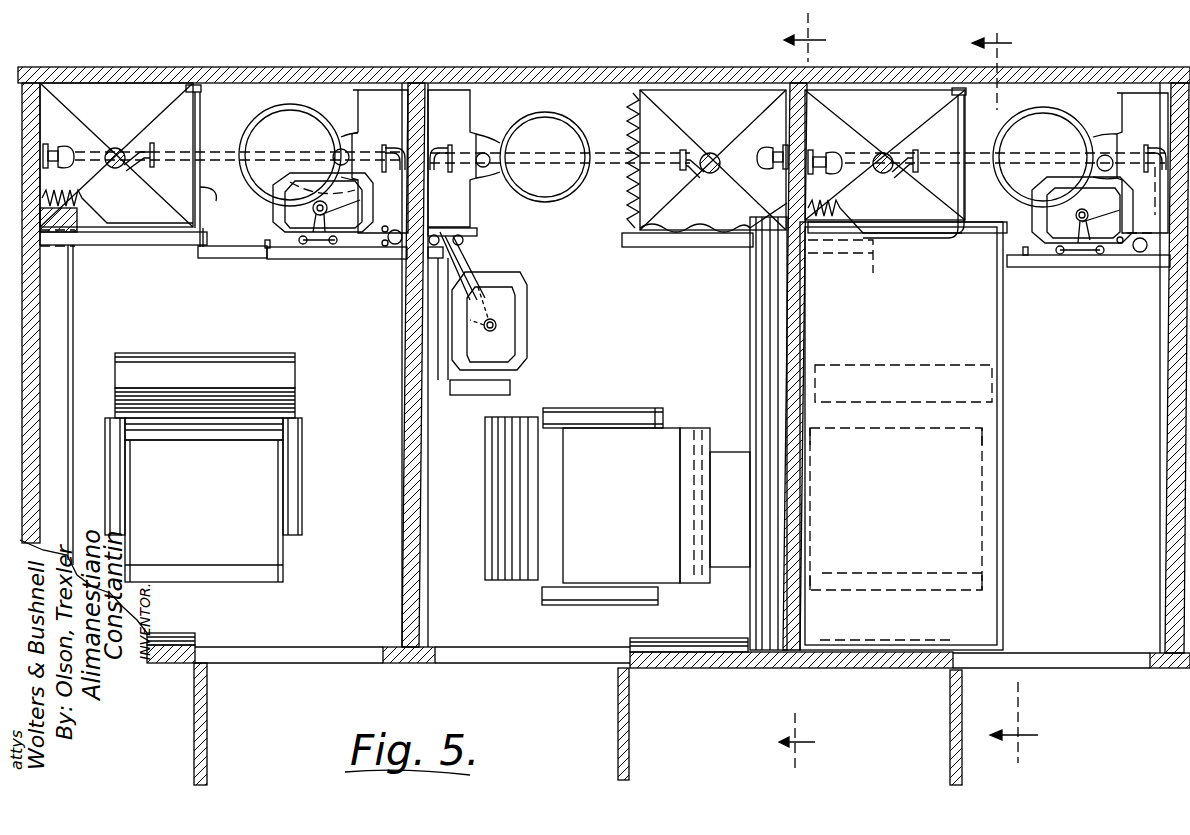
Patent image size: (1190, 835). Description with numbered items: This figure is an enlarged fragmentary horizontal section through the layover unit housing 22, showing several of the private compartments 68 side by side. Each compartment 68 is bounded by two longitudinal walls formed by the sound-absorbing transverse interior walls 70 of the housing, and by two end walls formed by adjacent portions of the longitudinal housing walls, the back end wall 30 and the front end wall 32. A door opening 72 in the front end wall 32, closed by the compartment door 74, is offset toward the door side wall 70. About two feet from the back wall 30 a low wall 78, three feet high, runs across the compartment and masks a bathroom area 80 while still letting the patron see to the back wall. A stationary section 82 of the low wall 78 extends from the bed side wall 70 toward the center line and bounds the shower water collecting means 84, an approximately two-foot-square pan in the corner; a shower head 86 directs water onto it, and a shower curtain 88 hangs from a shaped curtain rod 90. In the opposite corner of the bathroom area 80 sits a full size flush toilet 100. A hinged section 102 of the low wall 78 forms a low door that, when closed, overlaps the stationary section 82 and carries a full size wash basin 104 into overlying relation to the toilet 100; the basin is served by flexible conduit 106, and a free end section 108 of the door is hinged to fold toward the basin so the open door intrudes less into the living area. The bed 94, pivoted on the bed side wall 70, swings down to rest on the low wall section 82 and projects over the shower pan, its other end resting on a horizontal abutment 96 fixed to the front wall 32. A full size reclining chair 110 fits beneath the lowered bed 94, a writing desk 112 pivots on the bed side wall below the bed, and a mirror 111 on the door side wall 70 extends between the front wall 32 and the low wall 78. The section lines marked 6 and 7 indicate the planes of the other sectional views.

The section line 6- 6 is at (1012, 397).
The section line 7- 7 is at (811, 391).
The housing 22 is at (358, 70).
The longitudinal side wall 30 is at (143, 70).
The longitudinal side wall 32 is at (700, 668).
The private compartment 68 is at (584, 100).
The transverse interior wall 70 is at (33, 80).
The door opening 72 is at (380, 663).
The compartment door 74 is at (207, 735).
The low wall 78 is at (188, 254).
The bathroom area 80 is at (262, 88).
The stationary low wall section 82 is at (118, 238).
The shower water collecting means 84 is at (178, 125).
The shower head 86 is at (69, 147).
The shower curtain 88 is at (83, 198).
The curtain rod 90 is at (199, 190).
The bed 94 is at (50, 350).
The horizontal abutment 96 is at (186, 635).
The flush toilet 100 is at (300, 125).
The low door 102 is at (310, 259).
The wash basin 104 is at (273, 230).
The flexible conduit 106 is at (485, 262).
The free end section 108 is at (233, 258).
The reclining chair 110 is at (295, 490).
The mirror 111 is at (400, 510).
The writing desk 112 is at (727, 560).